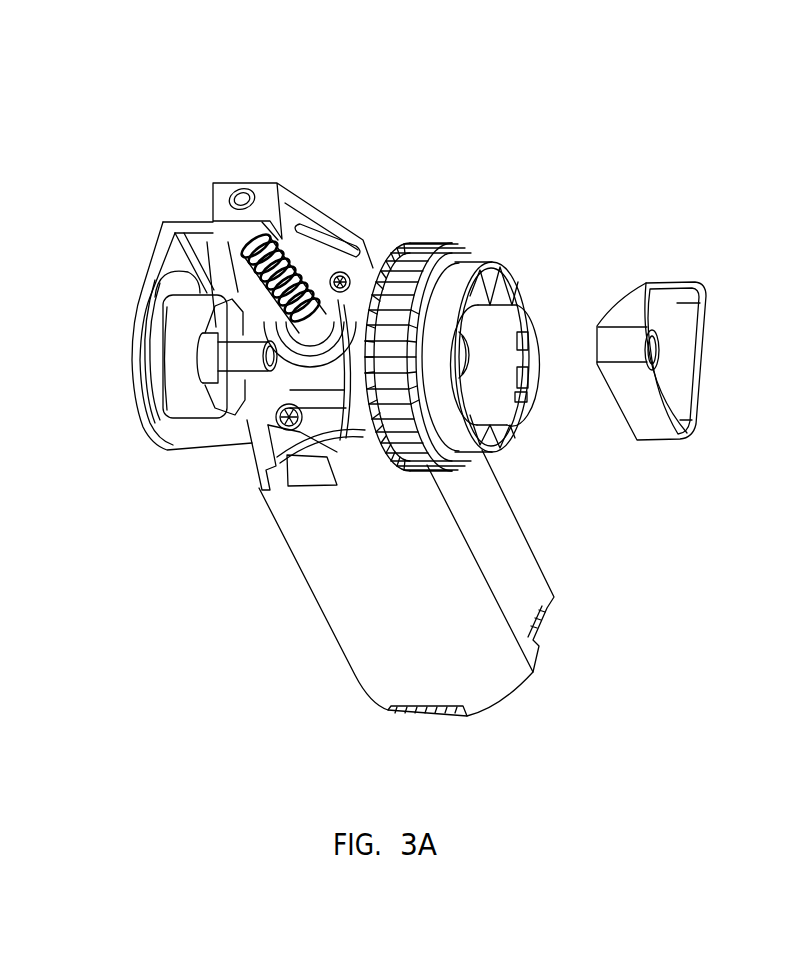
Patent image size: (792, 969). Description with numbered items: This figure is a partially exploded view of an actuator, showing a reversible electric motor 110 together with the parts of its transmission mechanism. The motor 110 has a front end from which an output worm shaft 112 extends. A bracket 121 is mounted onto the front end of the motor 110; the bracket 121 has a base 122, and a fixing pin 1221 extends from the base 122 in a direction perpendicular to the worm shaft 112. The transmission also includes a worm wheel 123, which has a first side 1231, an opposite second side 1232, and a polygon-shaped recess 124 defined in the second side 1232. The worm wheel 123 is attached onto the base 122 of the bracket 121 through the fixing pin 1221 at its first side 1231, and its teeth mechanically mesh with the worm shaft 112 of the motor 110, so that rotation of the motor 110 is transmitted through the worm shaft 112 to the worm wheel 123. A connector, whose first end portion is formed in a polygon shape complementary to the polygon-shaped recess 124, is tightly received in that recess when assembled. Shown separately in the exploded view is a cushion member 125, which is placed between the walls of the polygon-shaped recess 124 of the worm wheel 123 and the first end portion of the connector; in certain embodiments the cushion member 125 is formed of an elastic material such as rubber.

The motor 110 is at (515, 578).
The output worm shaft 112 is at (285, 337).
The bracket 121 is at (215, 212).
The base 122 is at (238, 258).
The worm wheel 123 is at (428, 246).
The polygon-shaped recess 124 is at (490, 317).
The cushion member 125 is at (623, 337).
The fixing pin 1221 is at (250, 352).
The first side 1231 is at (343, 375).
The second side 1232 is at (458, 402).